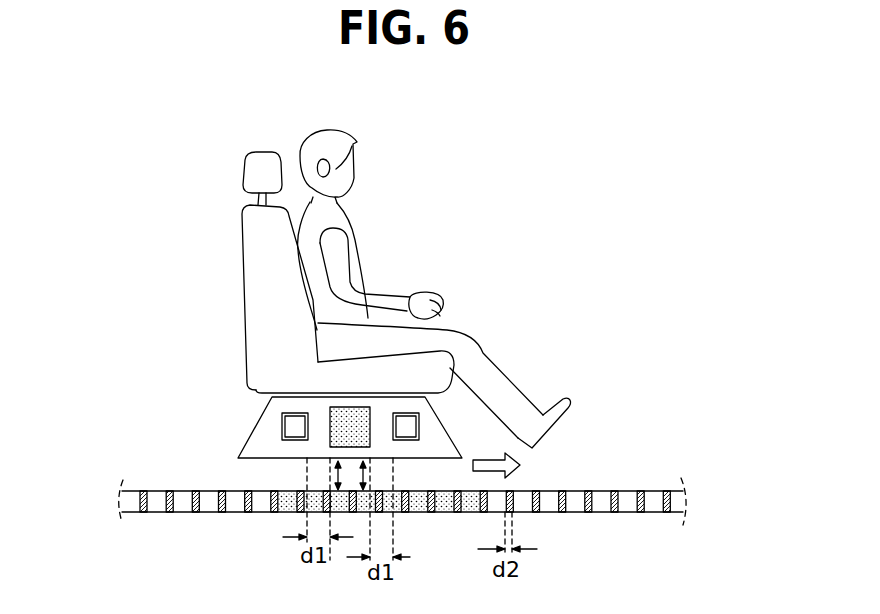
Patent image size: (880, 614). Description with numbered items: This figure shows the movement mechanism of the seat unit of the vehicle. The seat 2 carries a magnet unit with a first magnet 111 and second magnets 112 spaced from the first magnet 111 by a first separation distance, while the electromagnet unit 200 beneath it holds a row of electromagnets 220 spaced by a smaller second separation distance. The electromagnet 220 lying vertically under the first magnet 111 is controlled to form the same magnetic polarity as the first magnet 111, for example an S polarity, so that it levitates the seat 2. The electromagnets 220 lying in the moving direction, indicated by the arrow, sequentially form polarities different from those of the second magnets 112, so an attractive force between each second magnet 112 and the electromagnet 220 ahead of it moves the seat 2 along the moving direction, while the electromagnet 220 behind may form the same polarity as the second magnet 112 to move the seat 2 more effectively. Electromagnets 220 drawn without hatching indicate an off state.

The seat 2 is at (272, 280).
The first magnet 111 is at (330, 413).
The second magnet 112 is at (282, 428).
The electromagnet unit 200 is at (577, 514).
The electromagnet 220 is at (313, 513).